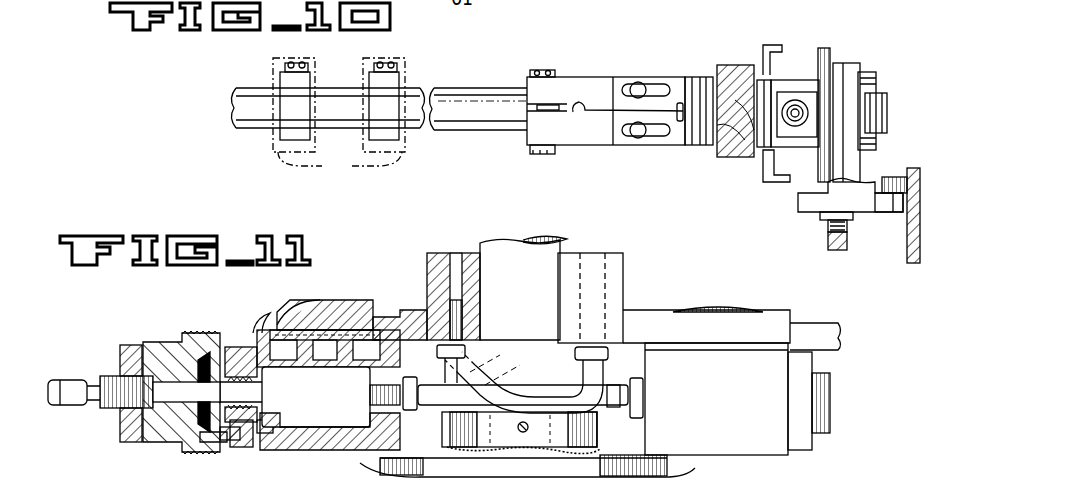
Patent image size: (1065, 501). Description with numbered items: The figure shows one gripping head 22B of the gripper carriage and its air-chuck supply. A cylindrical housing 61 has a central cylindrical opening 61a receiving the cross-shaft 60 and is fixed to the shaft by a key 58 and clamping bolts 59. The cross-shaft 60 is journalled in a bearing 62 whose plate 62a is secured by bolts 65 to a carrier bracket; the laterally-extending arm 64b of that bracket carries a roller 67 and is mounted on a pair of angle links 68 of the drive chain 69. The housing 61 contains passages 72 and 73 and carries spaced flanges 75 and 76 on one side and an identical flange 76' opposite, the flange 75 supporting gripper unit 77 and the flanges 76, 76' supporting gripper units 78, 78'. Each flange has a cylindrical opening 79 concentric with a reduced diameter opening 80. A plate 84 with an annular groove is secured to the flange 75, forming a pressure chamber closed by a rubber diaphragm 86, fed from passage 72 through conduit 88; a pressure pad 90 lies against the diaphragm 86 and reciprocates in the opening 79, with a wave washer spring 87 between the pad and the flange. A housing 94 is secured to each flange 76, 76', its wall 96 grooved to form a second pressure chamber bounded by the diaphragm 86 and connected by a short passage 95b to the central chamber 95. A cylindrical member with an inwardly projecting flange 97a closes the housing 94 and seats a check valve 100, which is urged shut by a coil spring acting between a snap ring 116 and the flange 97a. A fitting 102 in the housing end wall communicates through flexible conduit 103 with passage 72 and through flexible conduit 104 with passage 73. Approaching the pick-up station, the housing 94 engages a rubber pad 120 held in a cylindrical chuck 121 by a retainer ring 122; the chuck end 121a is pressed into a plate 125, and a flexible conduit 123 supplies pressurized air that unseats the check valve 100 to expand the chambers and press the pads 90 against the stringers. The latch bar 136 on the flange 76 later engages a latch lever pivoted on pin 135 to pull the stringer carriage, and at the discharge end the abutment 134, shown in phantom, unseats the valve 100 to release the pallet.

In FIG. 10, the gripping head 22B is at (573, 162).
In FIG. 10, the key 58 is at (523, 85).
In FIG. 10, the clamping bolts 59 is at (543, 70).
In FIG. 10, the cross-shaft 60 is at (240, 105).
In FIG. 11, the cross-shaft 60 is at (507, 278).
In FIG. 10, the cylindrical housing 61 is at (533, 136).
In FIG. 11, the cylindrical housing 61 is at (622, 262).
In FIG. 11, the central cylindrical opening 61a is at (484, 244).
In FIG. 10, the bearing 62 is at (867, 77).
In FIG. 10, the plate 62a is at (850, 63).
In FIG. 11, the plate 62a is at (688, 485).
In FIG. 10, the laterally-extending arm 64b is at (885, 213).
In FIG. 10, the bolts 65 is at (868, 100).
In FIG. 10, the roller 67 is at (890, 183).
In FIG. 10, the angle links 68 is at (810, 215).
In FIG. 10, the drive chain 69 is at (823, 233).
In FIG. 11, the passage 72 is at (450, 258).
In FIG. 11, the passage 73 is at (597, 252).
In FIG. 10, the flange 75 is at (705, 78).
In FIG. 11, the flange 76 is at (235, 306).
In FIG. 11, the flange 76' is at (797, 318).
In FIG. 10, the gripper unit 77 is at (693, 150).
In FIG. 10, the gripper unit 78 is at (749, 145).
In FIG. 11, the gripper unit 78 is at (263, 291).
In FIG. 11, the gripper unit 78' is at (833, 324).
In FIG. 11, the cylindrical opening 79 is at (298, 311).
In FIG. 11, the reduced diameter opening 80 is at (282, 319).
In FIG. 10, the plate 84 is at (687, 80).
In FIG. 11, the rubber diaphragm 86 is at (337, 318).
In FIG. 11, the wave washer spring 87 is at (380, 316).
In FIG. 10, the conduit 88 is at (607, 112).
In FIG. 10, the pressure pad 90 is at (755, 158).
In FIG. 10, the housing 94 is at (811, 143).
In FIG. 11, the central chamber 95 is at (317, 417).
In FIG. 11, the short passage 95b is at (330, 352).
In FIG. 11, the wall 96 is at (435, 341).
In FIG. 11, the inwardly projecting flange 97a is at (257, 434).
In FIG. 10, the check valve 100 is at (796, 100).
In FIG. 11, the check valve 100 is at (280, 449).
In FIG. 11, the fitting 102 is at (396, 406).
In FIG. 11, the flexible conduit 103 is at (512, 382).
In FIG. 11, the flexible conduit 104 is at (604, 408).
In FIG. 11, the snap ring 116 is at (238, 348).
In FIG. 11, the rubber pad 120 is at (182, 443).
In FIG. 11, the cylindrical chuck 121 is at (153, 345).
In FIG. 11, the cylindrical end 121a is at (120, 416).
In FIG. 11, the retainer ring 122 is at (187, 335).
In FIG. 11, the flexible conduit 123 is at (83, 402).
In FIG. 11, the plate 125 is at (120, 356).
In FIG. 10, the abutment 134 is at (282, 80).
In FIG. 10, the pin 135 is at (395, 78).
In FIG. 10, the latch bar 136 is at (773, 47).